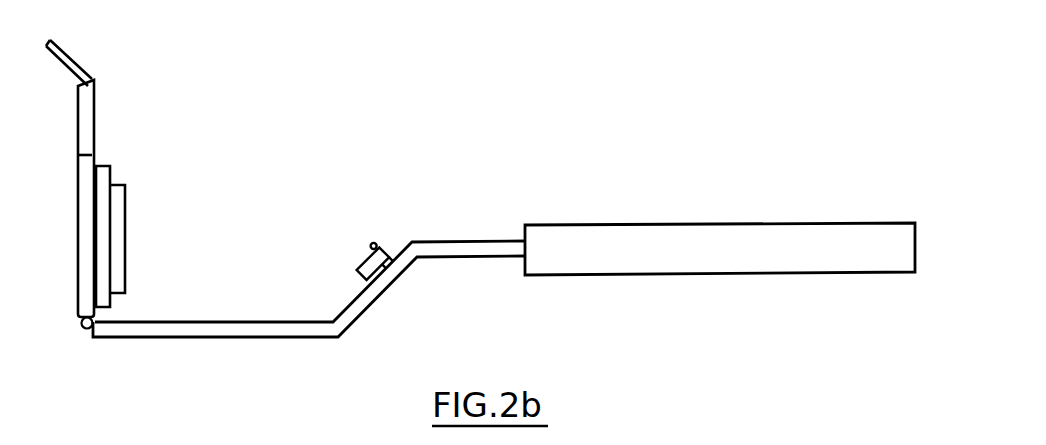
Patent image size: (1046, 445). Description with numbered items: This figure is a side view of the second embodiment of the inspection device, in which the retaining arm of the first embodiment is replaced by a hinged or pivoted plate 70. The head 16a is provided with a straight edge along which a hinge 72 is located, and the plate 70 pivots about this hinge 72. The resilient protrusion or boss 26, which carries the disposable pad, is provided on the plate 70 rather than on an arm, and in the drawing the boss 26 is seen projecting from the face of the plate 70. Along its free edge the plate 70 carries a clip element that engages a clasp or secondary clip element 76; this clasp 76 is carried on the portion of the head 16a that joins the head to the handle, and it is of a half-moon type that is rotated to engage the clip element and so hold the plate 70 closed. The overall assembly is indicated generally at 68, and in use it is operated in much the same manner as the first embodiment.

The hinged or pivoted plate 70 is at (88, 118).
The protrusion or boss 26 is at (118, 228).
The hinge 72 is at (84, 330).
The head 16a is at (235, 330).
The clasp or secondary clip element 76 is at (383, 248).
The actuator housing assembly 68 is at (455, 341).